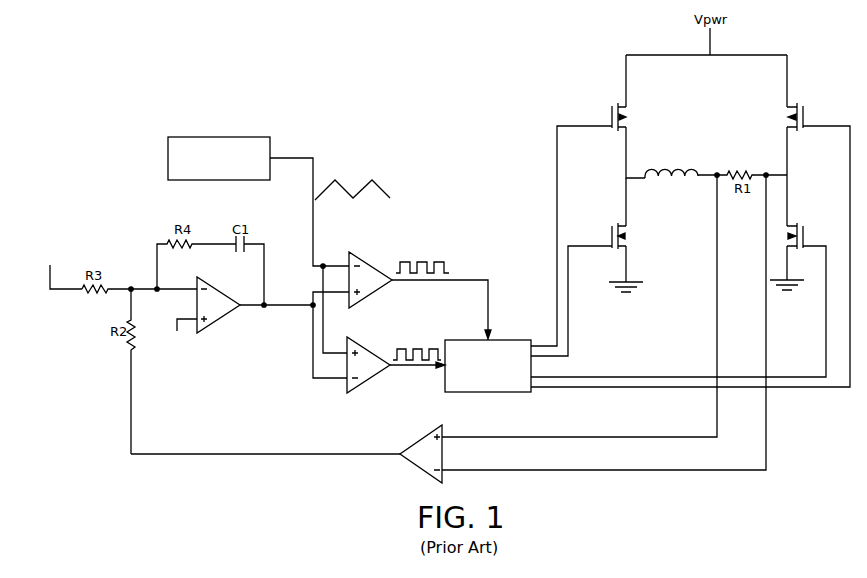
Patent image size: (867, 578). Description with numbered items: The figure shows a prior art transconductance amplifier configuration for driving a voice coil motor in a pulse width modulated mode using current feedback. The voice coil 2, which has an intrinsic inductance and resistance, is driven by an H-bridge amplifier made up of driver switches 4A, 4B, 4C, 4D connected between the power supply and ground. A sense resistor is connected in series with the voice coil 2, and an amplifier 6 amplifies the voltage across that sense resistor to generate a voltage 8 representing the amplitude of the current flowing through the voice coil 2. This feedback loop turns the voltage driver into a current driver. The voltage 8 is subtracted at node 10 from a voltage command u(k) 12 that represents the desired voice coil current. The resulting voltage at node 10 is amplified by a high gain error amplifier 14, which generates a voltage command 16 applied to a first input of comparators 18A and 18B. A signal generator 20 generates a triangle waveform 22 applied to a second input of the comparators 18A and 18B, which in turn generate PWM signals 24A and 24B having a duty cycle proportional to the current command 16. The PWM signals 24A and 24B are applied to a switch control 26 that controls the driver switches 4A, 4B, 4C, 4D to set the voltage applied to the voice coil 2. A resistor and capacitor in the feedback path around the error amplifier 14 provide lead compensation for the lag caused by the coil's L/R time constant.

The voltage command u(k) 12 is at (48, 275).
The node 10 is at (130, 284).
The high gain error amplifier 14 is at (221, 319).
The voltage command 16 is at (270, 307).
The signal generator 20 is at (220, 137).
The triangle waveform 22 is at (311, 210).
The comparator 18A is at (370, 263).
The comparator 18B is at (368, 347).
The PWM signal 24A is at (415, 283).
The PWM signal 24B is at (407, 369).
The switch control 26 is at (488, 395).
The amplifier 6 is at (419, 436).
The voltage 8 is at (345, 452).
The voice coil 2 is at (670, 156).
The driver switch 4A is at (606, 101).
The driver switch 4B is at (809, 101).
The driver switch 4C is at (606, 219).
The driver switch 4D is at (804, 217).